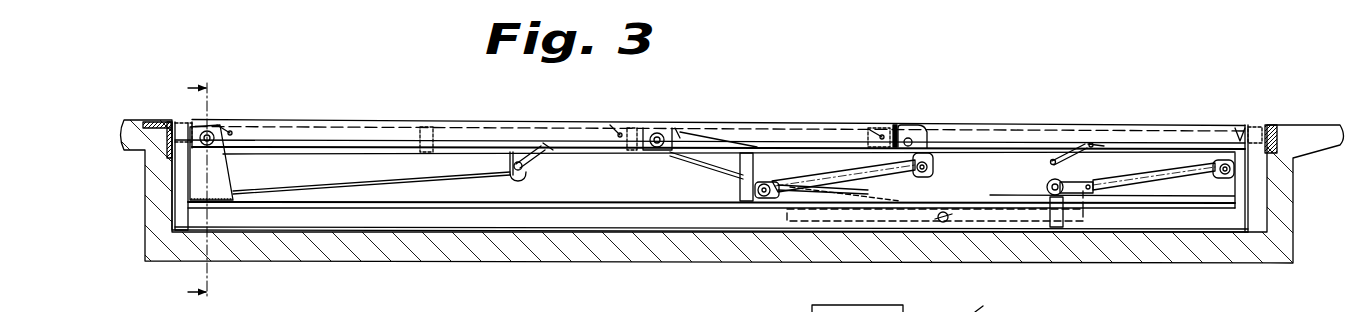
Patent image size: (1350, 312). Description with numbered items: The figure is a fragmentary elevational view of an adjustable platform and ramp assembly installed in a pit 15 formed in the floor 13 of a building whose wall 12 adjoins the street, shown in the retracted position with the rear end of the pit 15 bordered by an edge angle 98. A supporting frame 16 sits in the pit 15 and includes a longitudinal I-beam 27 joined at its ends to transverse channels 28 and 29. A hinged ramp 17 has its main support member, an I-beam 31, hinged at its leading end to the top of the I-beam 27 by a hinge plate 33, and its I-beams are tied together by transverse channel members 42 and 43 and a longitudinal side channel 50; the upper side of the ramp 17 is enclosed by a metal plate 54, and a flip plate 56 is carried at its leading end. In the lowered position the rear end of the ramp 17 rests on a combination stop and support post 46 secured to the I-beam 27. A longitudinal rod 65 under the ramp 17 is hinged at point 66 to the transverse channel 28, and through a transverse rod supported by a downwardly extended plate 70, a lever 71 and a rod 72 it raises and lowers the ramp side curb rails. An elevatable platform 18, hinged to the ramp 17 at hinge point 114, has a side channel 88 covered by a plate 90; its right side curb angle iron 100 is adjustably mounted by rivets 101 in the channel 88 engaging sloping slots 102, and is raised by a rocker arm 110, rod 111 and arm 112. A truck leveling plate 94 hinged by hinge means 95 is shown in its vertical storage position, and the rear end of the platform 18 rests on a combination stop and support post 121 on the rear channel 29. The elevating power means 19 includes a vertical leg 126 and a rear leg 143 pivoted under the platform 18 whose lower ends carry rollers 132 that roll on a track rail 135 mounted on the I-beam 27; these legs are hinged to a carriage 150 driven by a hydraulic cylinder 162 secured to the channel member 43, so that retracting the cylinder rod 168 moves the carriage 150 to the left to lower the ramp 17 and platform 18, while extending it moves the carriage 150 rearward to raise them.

The wall 12 is at (171, 188).
The floor 13 is at (1320, 128).
The pit 15 is at (1258, 228).
The supporting frame 16 is at (580, 215).
The hinged ramp 17 is at (591, 121).
The elevatable platform 18 is at (1156, 122).
The elevating power means 19 is at (868, 188).
The I-beam 27 is at (635, 215).
The transverse channel 28 is at (158, 231).
The transverse channel 29 is at (1240, 220).
The main support member 31 is at (338, 150).
The hinge plate 33 is at (218, 173).
The transverse channel member 42 is at (460, 125).
The transverse channel member 43 is at (627, 138).
The combination stop and support post 46 is at (743, 186).
The channel member 50 is at (370, 133).
The metal plate 54 is at (298, 122).
The flip plate 56 is at (158, 123).
The rod 65 is at (426, 184).
The hinge point 66 is at (205, 199).
The downwardly extended plate 70 is at (522, 178).
The lever 71 is at (523, 167).
The rod 72 is at (530, 152).
The side channel 88 is at (1165, 147).
The plate 90 is at (1060, 120).
The truck leveling plate 94 is at (1237, 192).
The hinge means 95 is at (1273, 137).
The edge angle 98 is at (1302, 127).
The right side curb angle iron 100 is at (1015, 130).
The rivets 101 is at (930, 138).
The slots 102 is at (923, 132).
The rocker arm 110 is at (1050, 163).
The rod 111 is at (1070, 155).
The arm 112 is at (1102, 145).
The hinge point 114 is at (895, 134).
The combination stop and support post 121 is at (1250, 197).
The vertical leg 126 is at (809, 192).
The roller 132 is at (1060, 267).
The track rail 135 is at (972, 200).
The leg 143 is at (1136, 178).
The carriage 150 is at (972, 219).
The hydraulic cylinder 162 is at (768, 162).
The cylinder rod 168 is at (846, 192).